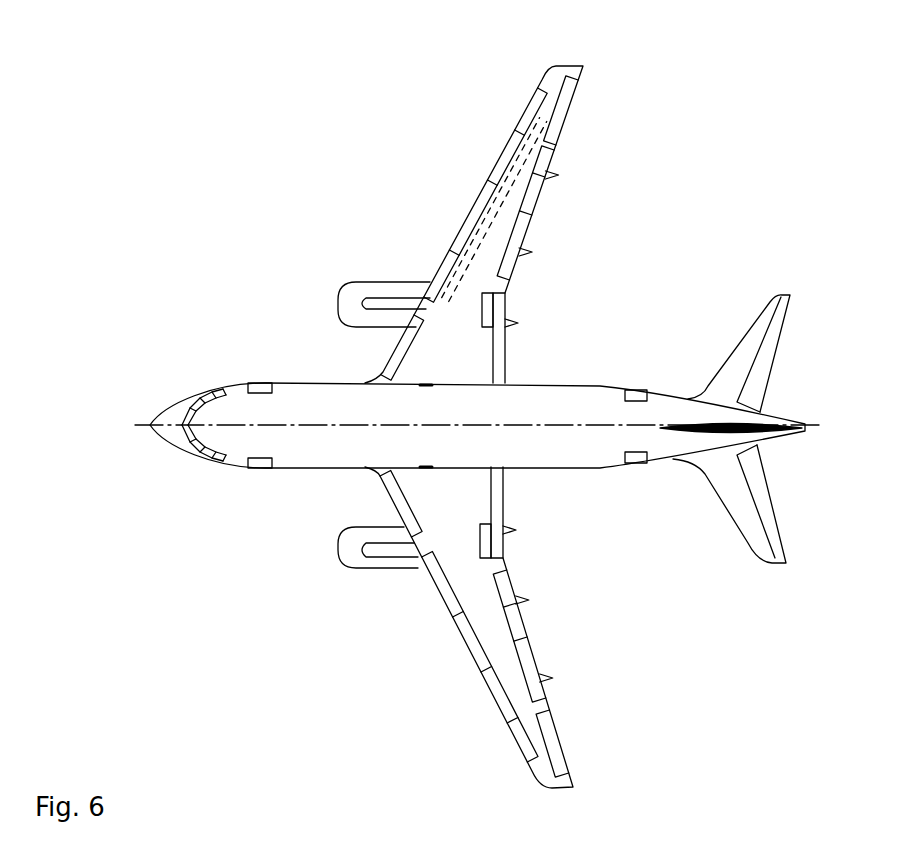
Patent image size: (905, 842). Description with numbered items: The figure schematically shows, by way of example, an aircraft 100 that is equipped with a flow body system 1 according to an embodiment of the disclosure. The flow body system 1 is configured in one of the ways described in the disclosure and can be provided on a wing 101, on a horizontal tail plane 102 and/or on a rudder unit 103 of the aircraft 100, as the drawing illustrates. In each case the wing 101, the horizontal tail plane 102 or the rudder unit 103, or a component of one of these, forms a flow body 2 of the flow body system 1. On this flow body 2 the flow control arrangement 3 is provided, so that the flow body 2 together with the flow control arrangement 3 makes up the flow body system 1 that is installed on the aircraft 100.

The aircraft 100 is at (241, 140).
The wing 101 is at (559, 73).
The horizontal tail plane 102 is at (760, 312).
The rudder unit 103 is at (698, 436).
The flow body system 1 is at (442, 243).
The flow body 2 is at (480, 354).
The flow control arrangement 3 is at (450, 293).